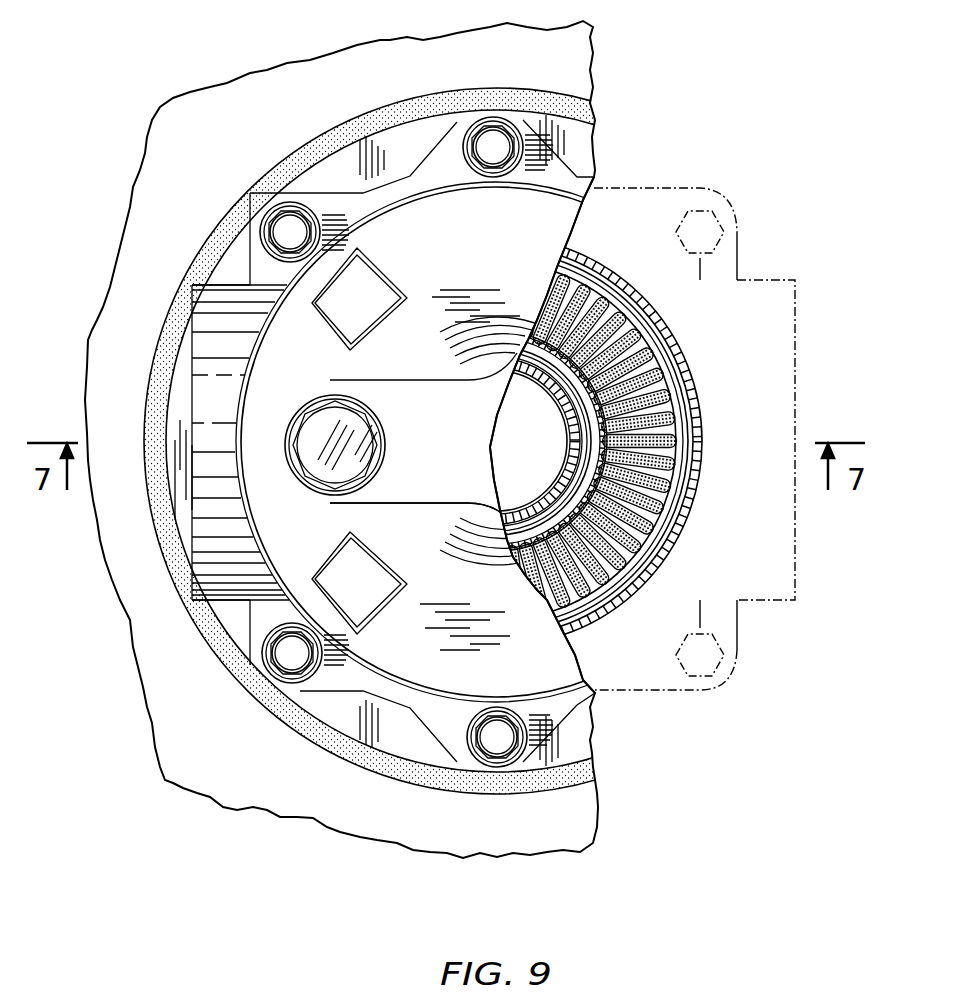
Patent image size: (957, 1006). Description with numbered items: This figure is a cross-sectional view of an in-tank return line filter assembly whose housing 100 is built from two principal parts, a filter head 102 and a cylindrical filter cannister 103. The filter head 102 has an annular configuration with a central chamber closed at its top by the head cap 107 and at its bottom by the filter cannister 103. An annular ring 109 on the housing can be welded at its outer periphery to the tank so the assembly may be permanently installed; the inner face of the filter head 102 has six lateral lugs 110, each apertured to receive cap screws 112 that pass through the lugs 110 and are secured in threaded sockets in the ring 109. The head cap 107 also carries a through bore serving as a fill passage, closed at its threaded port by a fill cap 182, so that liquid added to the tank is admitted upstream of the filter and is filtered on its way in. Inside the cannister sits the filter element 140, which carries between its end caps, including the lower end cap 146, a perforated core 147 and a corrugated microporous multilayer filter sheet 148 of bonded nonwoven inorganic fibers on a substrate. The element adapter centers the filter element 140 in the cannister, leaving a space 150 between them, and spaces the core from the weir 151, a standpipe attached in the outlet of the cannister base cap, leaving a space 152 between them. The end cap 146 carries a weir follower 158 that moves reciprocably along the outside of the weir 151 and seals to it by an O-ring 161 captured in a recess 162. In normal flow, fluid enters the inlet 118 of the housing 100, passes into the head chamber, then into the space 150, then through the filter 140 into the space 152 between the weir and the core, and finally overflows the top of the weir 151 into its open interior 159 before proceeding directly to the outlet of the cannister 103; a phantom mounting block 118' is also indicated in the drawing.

The housing 100 is at (232, 280).
The filter head 102 is at (345, 192).
The filter cannister 103 is at (497, 441).
The head cap 107 is at (468, 452).
The annular ring 109 is at (314, 716).
The lateral lugs 110 is at (478, 113).
The cap screws 112 is at (501, 135).
The inlet 118 is at (196, 442).
The mounting block (phantom) 118' is at (737, 439).
The filter element 140 is at (532, 441).
The end cap 146 is at (497, 441).
The perforated core 147 is at (560, 350).
The corrugated microporous multilayer filter sheet 148 is at (497, 441).
The space 150 is at (497, 441).
The weir 151 is at (497, 441).
The space 152 is at (497, 441).
The weir follower 158 is at (504, 556).
The open interior 159 is at (423, 492).
The O-ring 161 is at (497, 441).
The recess 162 is at (497, 441).
The fill cap 182 is at (340, 470).